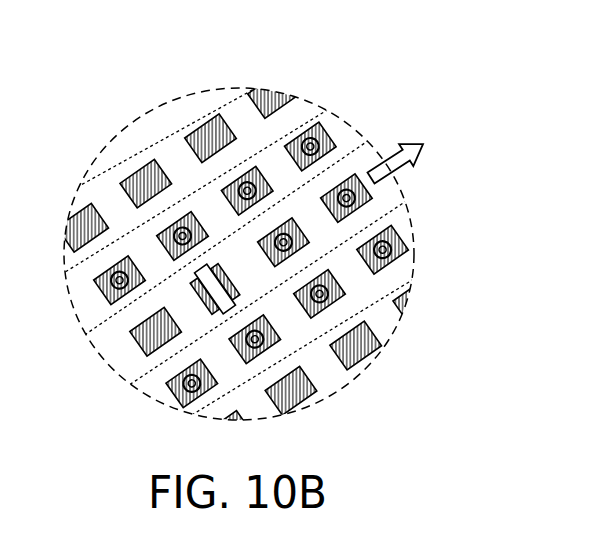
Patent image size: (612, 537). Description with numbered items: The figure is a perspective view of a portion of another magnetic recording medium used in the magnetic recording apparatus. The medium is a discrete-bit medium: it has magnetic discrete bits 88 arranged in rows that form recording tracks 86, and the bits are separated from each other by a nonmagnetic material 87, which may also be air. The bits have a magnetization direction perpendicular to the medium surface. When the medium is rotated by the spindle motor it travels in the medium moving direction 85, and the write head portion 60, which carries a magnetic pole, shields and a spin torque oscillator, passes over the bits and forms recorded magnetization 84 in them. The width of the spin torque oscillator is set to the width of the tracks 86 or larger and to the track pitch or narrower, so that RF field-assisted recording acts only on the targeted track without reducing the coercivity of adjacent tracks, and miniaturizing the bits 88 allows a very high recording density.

The write head portion 60 is at (207, 293).
The recorded magnetization 84 is at (247, 162).
The medium moving direction 85 is at (421, 141).
The recording tracks 86 is at (323, 232).
The nonmagnetic material 87 is at (120, 160).
The magnetic discrete bits 88 is at (152, 157).